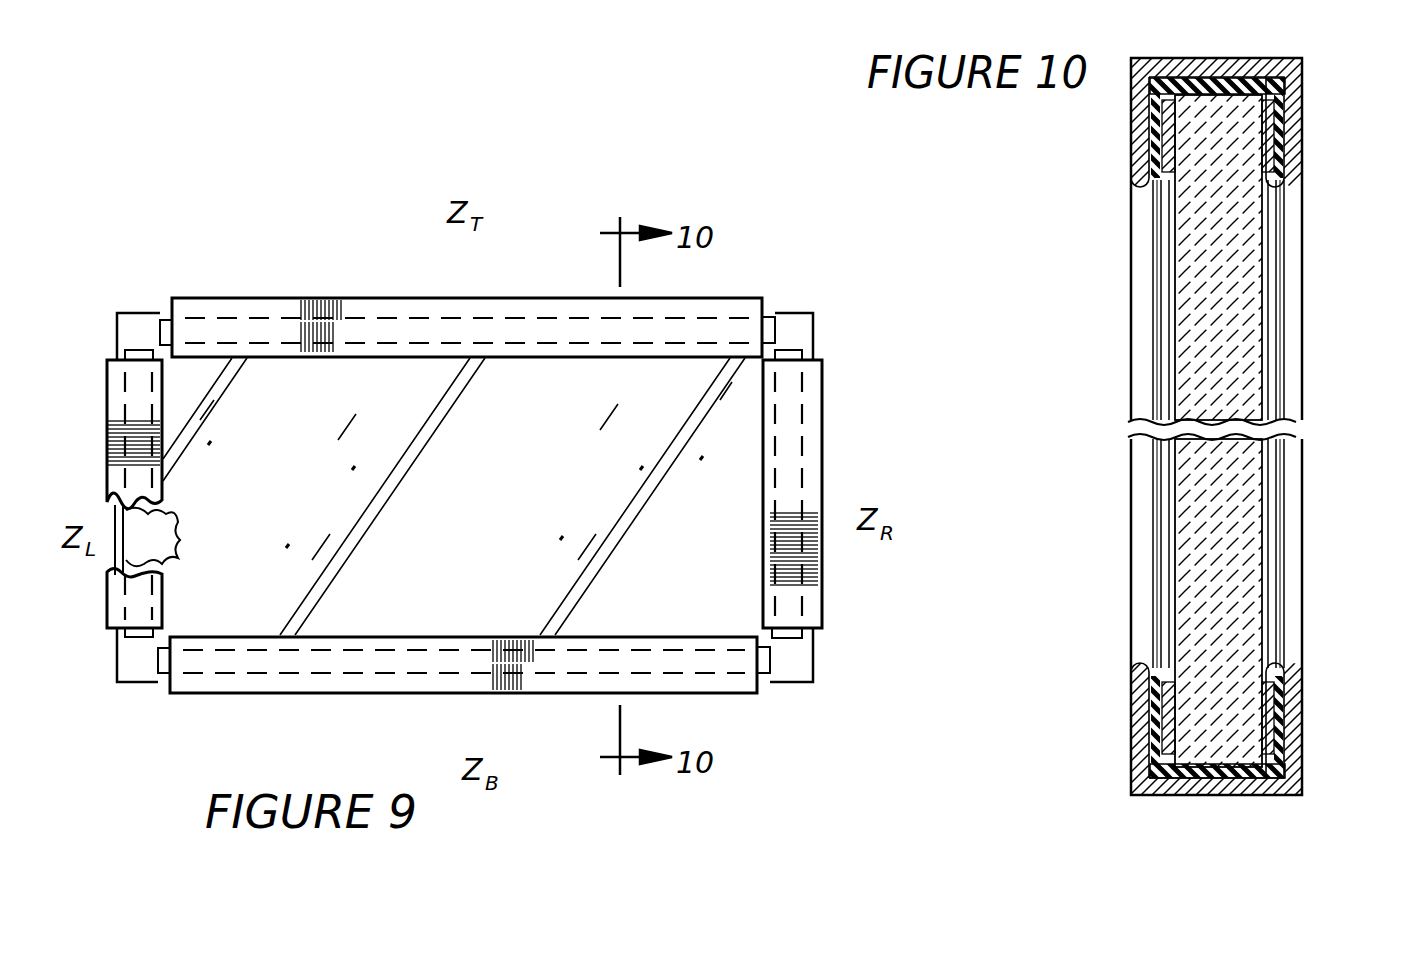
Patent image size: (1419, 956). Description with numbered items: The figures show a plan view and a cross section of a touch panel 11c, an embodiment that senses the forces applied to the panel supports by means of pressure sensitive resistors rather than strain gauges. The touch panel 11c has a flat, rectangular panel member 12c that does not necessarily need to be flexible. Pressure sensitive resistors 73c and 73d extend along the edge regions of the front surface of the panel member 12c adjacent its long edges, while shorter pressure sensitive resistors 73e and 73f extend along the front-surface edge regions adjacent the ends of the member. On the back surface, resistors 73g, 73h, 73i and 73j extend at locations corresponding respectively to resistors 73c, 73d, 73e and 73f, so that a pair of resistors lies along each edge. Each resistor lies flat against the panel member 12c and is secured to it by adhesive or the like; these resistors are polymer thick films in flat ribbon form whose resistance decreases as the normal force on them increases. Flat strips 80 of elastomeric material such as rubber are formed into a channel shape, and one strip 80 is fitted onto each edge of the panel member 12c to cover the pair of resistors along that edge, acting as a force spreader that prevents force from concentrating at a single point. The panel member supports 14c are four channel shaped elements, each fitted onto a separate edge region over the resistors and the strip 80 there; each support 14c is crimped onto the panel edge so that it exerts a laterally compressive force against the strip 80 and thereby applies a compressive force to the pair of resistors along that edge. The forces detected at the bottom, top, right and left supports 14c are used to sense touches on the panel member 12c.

In FIG. 9, the touch panel 11c is at (830, 297).
In FIG. 9, the panel member 12c is at (470, 503).
In FIG. 10, the panel member 12c is at (1245, 339).
In FIG. 9, the panel member supports 14c is at (560, 298).
In FIG. 10, the panel member supports 14c is at (1295, 70).
In FIG. 9, the pressure sensitive resistor 73c is at (288, 318).
In FIG. 10, the pressure sensitive resistor 73c is at (1150, 136).
In FIG. 9, the pressure sensitive resistor 73d is at (372, 673).
In FIG. 10, the pressure sensitive resistor 73d is at (1152, 716).
In FIG. 9, the pressure sensitive resistor 73e is at (160, 490).
In FIG. 9, the pressure sensitive resistor 73f is at (772, 505).
In FIG. 10, the pressure sensitive resistor 73f is at (1156, 285).
In FIG. 10, the pressure sensitive resistor 73g is at (1272, 137).
In FIG. 10, the pressure sensitive resistor 73h is at (1282, 700).
In FIG. 9, the pressure sensitive resistor 73i is at (142, 536).
In FIG. 10, the pressure sensitive resistor 73j is at (1280, 258).
In FIG. 10, the flat strips 80 is at (1288, 110).